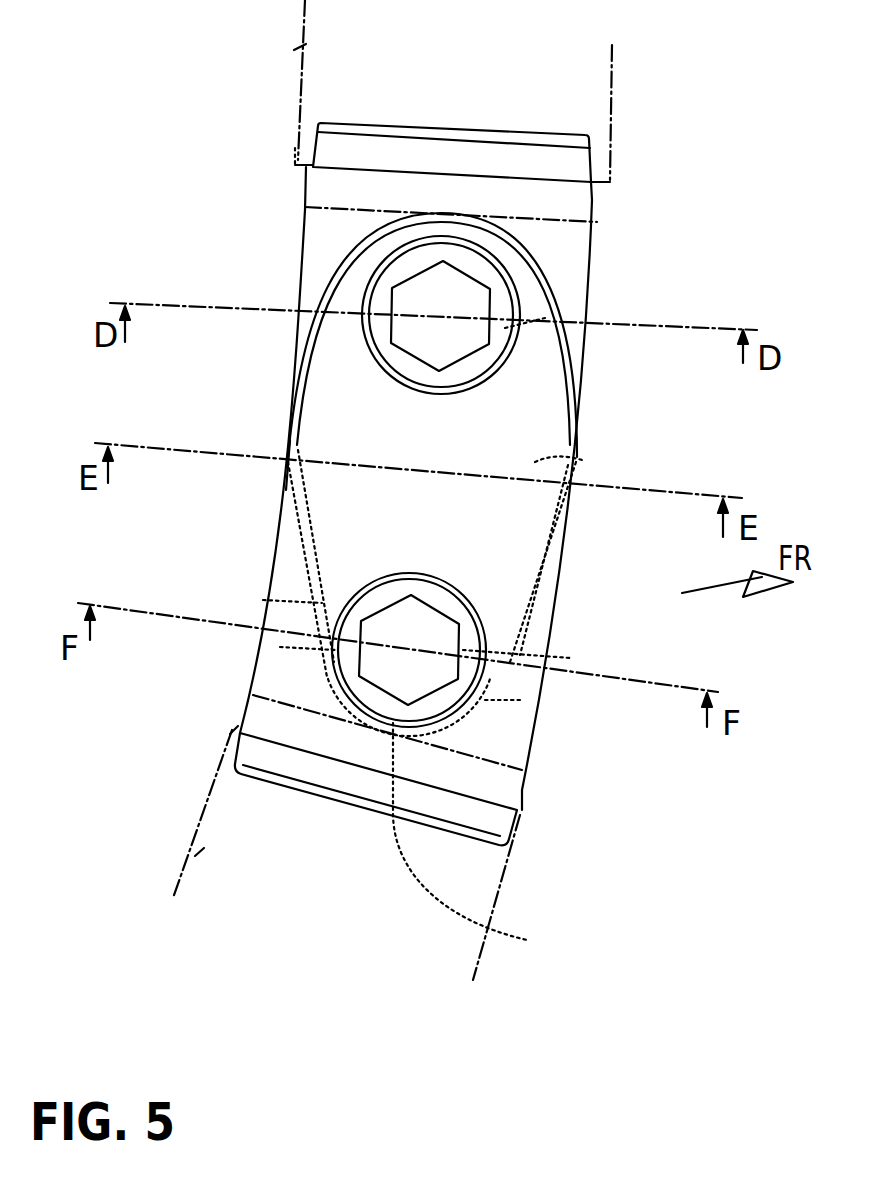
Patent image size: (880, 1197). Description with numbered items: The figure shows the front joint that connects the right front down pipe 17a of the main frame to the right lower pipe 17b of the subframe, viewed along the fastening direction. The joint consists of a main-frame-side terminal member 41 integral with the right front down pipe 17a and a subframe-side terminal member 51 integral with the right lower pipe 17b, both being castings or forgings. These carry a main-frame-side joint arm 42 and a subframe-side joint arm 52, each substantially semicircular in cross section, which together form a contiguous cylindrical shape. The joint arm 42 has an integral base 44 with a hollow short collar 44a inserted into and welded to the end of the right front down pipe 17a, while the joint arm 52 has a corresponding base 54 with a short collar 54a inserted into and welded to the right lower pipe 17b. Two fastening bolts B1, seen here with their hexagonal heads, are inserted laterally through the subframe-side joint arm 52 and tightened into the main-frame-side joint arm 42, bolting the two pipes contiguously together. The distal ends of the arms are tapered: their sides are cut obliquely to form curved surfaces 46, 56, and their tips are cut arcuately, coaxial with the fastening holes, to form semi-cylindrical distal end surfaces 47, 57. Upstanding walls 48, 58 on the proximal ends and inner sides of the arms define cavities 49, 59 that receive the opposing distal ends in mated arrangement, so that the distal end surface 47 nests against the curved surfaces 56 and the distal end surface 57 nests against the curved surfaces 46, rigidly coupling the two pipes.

The right front down pipe 17a is at (300, 47).
The right lower pipe 17b is at (200, 852).
The main-frame-side terminal member 41 is at (594, 222).
The main-frame-side joint arm 42 is at (582, 460).
The base 44 is at (325, 190).
The short collar 44a is at (320, 150).
The obliquely curved surfaces 46 is at (293, 603).
The semi-cylindrical distal end surface 47 is at (487, 920).
The upstanding wall 48 is at (322, 248).
The cavity 49 is at (530, 317).
The subframe-side terminal member 51 is at (251, 678).
The subframe-side joint arm 52 is at (313, 472).
The base 54 is at (508, 792).
The short collar 54a is at (497, 825).
The obliquely curved surfaces 56 is at (360, 315).
The semi-cylindrical distal end surface 57 is at (470, 228).
The upstanding wall 58 is at (285, 647).
The cavity 59 is at (500, 656).
The fastening bolts B1 is at (380, 353).